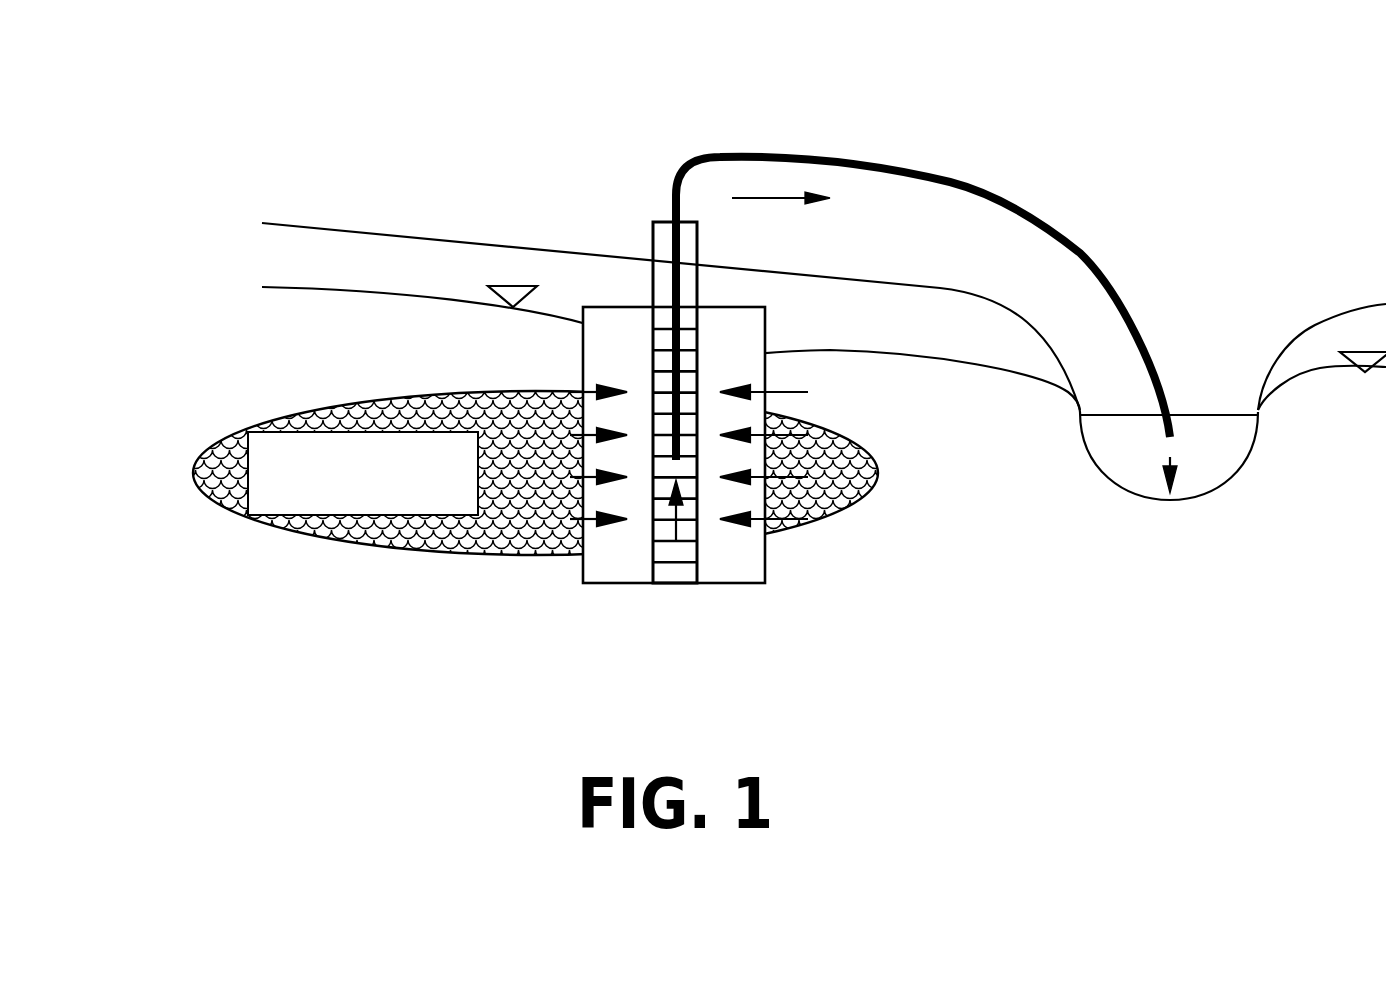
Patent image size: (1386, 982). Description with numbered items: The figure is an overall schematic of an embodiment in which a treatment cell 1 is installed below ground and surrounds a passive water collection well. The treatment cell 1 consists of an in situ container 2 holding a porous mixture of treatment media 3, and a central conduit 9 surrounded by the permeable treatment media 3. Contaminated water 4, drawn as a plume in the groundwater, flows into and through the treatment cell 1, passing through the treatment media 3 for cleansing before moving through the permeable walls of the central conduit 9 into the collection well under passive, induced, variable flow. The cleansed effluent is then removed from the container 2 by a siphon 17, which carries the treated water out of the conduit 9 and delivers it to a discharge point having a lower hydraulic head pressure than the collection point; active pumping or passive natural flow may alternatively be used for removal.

The treatment cell 1 is at (816, 400).
The container 2 is at (620, 583).
The treatment media 3 is at (627, 542).
The water 4 is at (345, 545).
The central conduit 9 is at (680, 540).
The siphon 17 is at (950, 182).